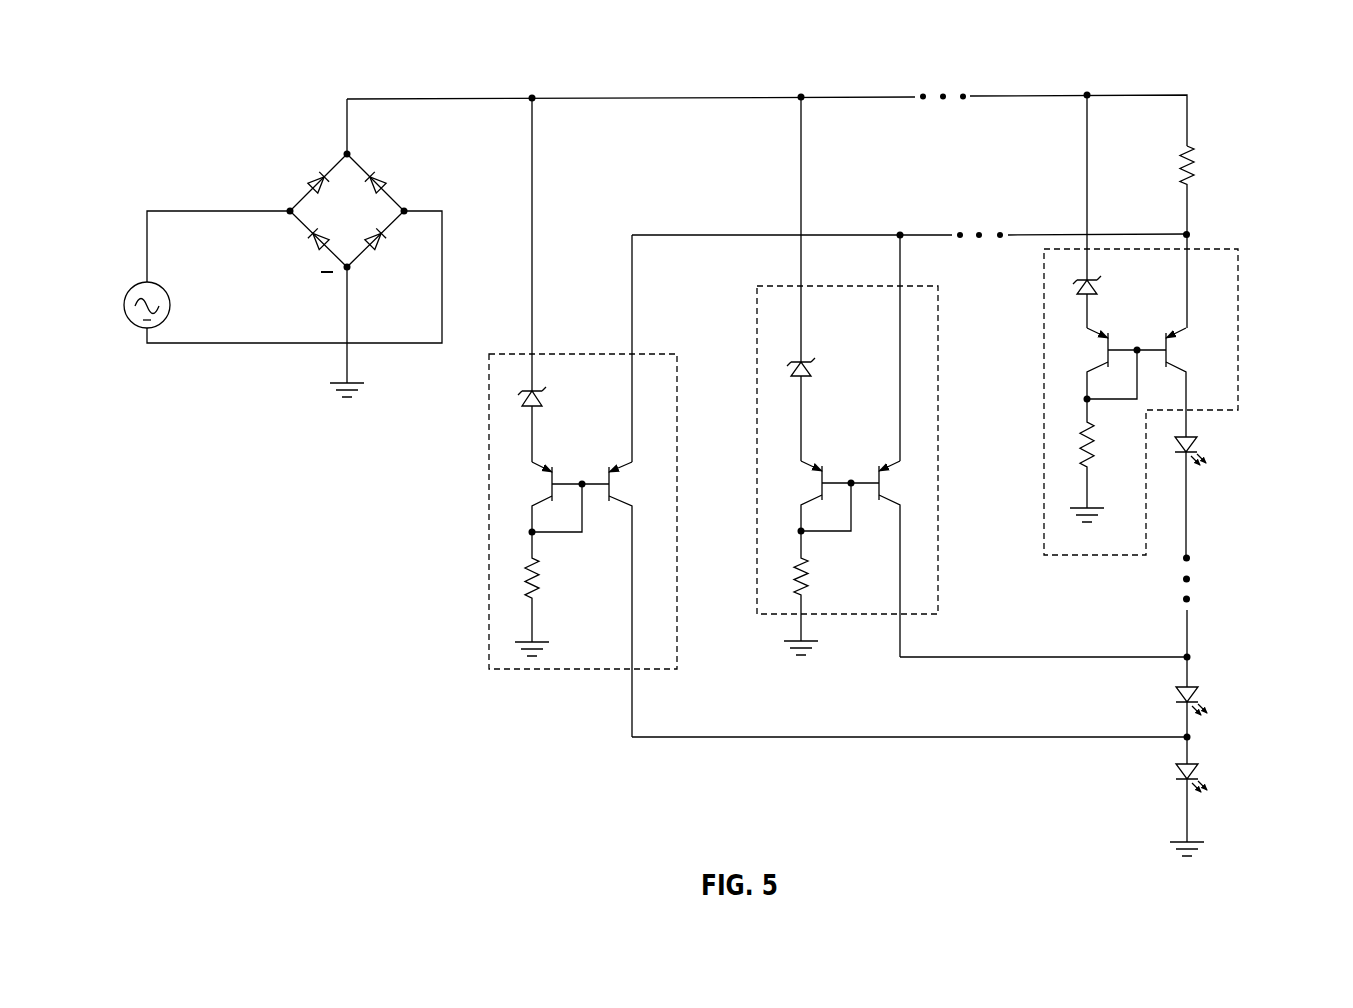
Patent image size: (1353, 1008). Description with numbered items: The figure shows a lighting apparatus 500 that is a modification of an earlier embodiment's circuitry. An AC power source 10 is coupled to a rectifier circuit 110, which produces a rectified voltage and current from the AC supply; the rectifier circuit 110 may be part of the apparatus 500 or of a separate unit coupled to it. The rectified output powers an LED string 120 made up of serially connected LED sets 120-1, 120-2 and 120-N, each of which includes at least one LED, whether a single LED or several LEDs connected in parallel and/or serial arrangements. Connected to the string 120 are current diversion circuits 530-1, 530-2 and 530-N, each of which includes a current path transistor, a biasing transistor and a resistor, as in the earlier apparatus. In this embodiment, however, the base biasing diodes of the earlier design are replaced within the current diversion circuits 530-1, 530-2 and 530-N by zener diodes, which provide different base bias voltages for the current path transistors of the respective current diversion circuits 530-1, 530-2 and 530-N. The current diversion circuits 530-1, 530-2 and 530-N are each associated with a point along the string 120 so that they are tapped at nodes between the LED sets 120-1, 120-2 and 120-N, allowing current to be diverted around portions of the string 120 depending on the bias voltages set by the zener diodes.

The apparatus 500 is at (170, 70).
The AC power source 10 is at (124, 302).
The rectifier circuit 110 is at (393, 154).
The current diversion circuit 530-1 is at (577, 670).
The current diversion circuit 530-2 is at (862, 617).
The current diversion circuit 530-N is at (1238, 330).
The LED string 120 is at (1160, 752).
The LED set 120-1 is at (1209, 772).
The LED set 120-2 is at (1209, 697).
The LED set 120-N is at (1210, 442).